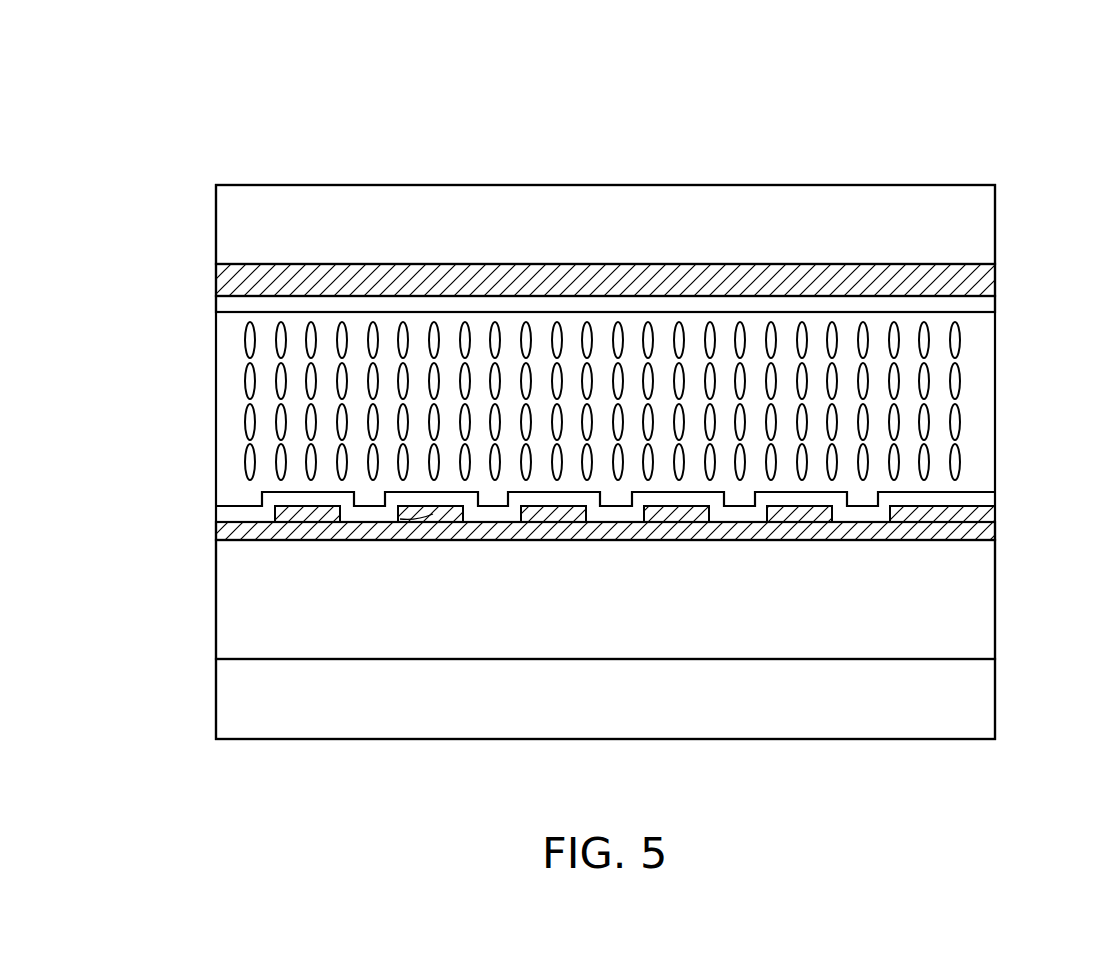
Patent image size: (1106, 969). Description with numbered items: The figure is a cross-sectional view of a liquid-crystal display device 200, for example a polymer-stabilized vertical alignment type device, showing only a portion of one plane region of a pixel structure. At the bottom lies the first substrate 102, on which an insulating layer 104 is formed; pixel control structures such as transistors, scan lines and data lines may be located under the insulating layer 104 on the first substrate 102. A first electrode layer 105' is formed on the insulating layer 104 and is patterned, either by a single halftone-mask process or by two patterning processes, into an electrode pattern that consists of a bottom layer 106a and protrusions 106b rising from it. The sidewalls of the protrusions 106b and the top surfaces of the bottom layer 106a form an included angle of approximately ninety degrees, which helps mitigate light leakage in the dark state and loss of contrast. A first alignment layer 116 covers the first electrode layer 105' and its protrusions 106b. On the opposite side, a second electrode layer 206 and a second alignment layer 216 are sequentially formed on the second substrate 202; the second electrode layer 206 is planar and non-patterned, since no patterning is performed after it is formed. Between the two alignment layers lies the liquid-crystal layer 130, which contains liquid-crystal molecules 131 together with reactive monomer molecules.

The liquid-crystal display device 200 is at (150, 126).
The second substrate 202 is at (973, 225).
The second electrode layer 206 is at (975, 285).
The second alignment layer 216 is at (973, 305).
The liquid-crystal layer 130 is at (211, 312).
The liquid-crystal molecules 131 is at (957, 378).
The protrusions 106b is at (832, 507).
The first alignment layer 116 is at (236, 515).
The first electrode layer 105' is at (549, 524).
The bottom layer 106a is at (975, 532).
The insulating layer 104 is at (973, 618).
The first substrate 102 is at (973, 710).